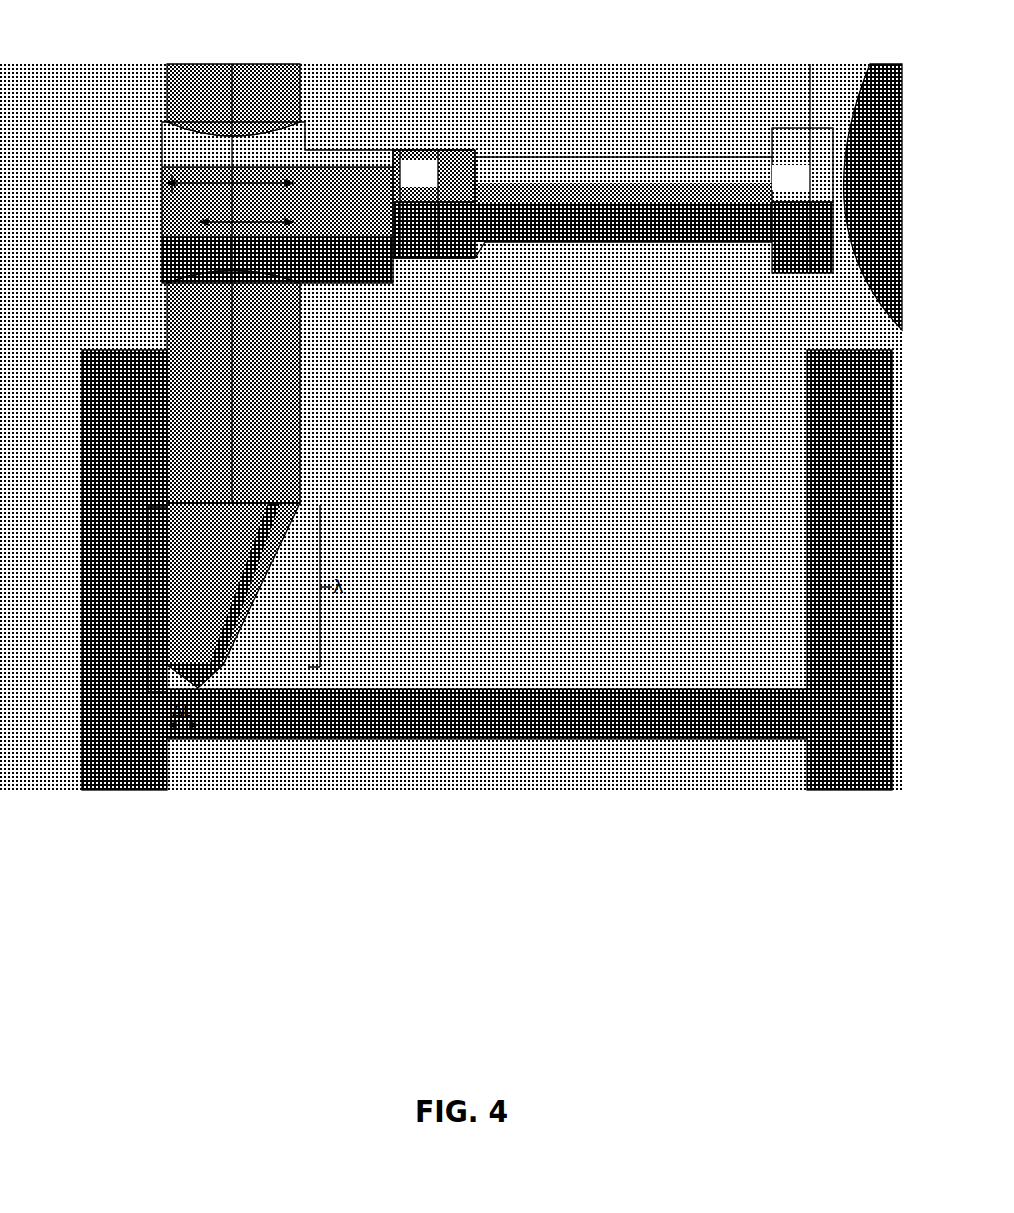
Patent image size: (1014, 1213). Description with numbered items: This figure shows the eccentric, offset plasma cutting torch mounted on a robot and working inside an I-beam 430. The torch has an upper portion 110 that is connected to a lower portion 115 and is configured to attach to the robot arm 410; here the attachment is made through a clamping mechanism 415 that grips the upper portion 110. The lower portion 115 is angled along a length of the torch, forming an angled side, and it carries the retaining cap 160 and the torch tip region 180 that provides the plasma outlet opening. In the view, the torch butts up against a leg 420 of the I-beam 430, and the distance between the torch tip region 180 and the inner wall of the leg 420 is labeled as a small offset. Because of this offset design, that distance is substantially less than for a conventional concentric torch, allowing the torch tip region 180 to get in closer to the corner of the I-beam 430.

The upper portion 110 is at (320, 68).
The lower portion 115 is at (148, 600).
The retaining cap 160 is at (263, 587).
The torch tip region 180 is at (220, 688).
The robot arm 410 is at (565, 157).
The clamping mechanism 415 is at (162, 207).
The leg 420 is at (117, 350).
The I-beam 430 is at (566, 661).